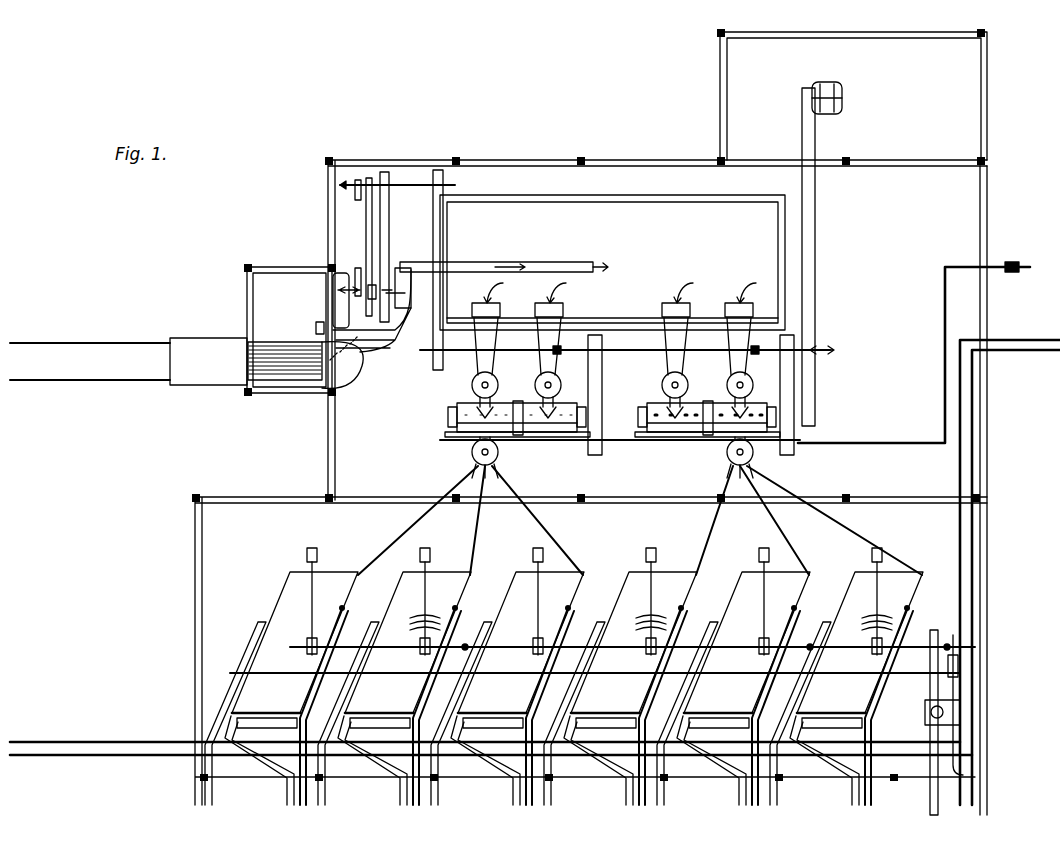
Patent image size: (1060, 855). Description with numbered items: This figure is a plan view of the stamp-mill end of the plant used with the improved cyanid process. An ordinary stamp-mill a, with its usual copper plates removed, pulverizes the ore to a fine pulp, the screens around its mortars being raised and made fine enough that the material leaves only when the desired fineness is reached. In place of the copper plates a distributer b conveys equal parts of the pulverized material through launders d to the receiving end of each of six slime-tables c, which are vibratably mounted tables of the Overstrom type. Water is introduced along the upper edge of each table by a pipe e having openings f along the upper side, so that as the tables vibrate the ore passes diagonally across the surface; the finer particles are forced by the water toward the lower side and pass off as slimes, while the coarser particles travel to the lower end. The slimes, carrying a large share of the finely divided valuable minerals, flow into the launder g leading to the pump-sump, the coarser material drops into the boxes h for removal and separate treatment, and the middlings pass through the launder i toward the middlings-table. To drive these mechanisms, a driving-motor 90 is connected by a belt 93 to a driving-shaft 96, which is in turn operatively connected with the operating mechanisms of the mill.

The driving-motor 90 is at (845, 102).
The belt 93 is at (814, 236).
The driving-shaft 96 is at (830, 352).
The stamp-mill a is at (730, 404).
The distributer b is at (726, 455).
The slime-tables c is at (577, 630).
The launders d is at (880, 520).
The pipe e is at (883, 666).
The openings f is at (876, 624).
The launder g is at (808, 690).
The boxes h is at (871, 724).
The launder i is at (843, 772).